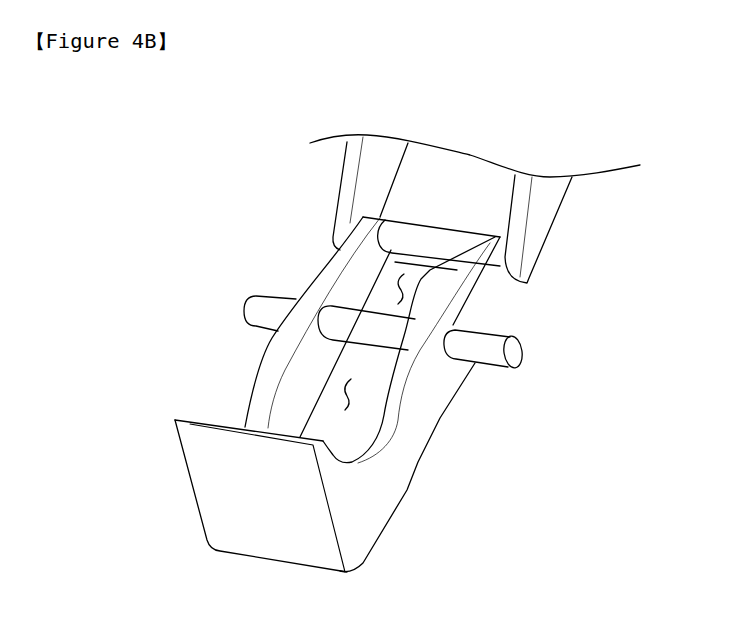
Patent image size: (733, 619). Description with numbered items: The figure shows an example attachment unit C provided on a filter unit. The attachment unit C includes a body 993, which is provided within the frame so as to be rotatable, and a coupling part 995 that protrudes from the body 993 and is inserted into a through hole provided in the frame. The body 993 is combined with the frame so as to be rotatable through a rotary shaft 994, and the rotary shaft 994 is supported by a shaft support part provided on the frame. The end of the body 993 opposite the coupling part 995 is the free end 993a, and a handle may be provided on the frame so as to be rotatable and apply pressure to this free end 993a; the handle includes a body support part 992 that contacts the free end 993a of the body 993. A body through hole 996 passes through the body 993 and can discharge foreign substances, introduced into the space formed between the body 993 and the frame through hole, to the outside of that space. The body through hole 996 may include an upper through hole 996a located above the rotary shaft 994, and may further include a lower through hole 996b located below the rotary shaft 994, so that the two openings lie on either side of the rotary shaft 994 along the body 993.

The body support part 992 is at (552, 208).
The body 993 is at (433, 418).
The free end 993a is at (443, 240).
The rotary shaft 994 is at (400, 322).
The coupling part 995 is at (225, 505).
The body through hole 996 is at (124, 259).
The upper through hole 996a is at (397, 290).
The lower through hole 996b is at (343, 396).
The attachment unit C is at (433, 477).